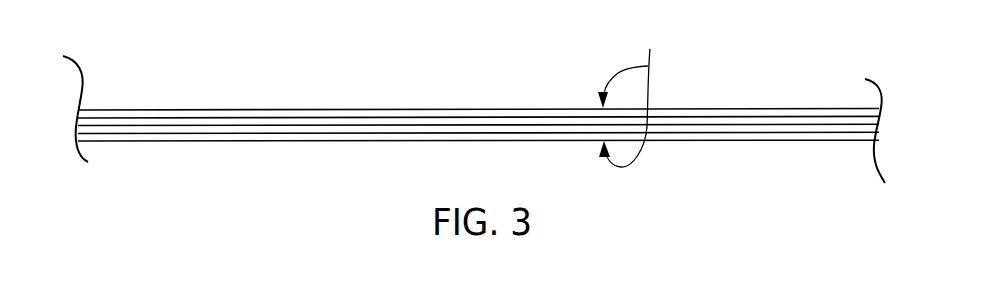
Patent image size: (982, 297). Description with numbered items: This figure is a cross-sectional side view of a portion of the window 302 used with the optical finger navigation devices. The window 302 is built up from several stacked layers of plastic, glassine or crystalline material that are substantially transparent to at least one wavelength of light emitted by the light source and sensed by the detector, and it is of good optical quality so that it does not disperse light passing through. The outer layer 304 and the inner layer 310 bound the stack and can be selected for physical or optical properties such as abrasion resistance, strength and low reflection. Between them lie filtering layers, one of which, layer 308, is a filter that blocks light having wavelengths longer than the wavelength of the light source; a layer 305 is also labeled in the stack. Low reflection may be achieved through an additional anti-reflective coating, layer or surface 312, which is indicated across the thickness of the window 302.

The window 302 is at (756, 75).
The outer layer 304 is at (362, 110).
The second layer 305 is at (420, 119).
The second filter layer 308 is at (477, 132).
The inner layer 310 is at (538, 139).
The anti-reflective coating 312 is at (633, 98).